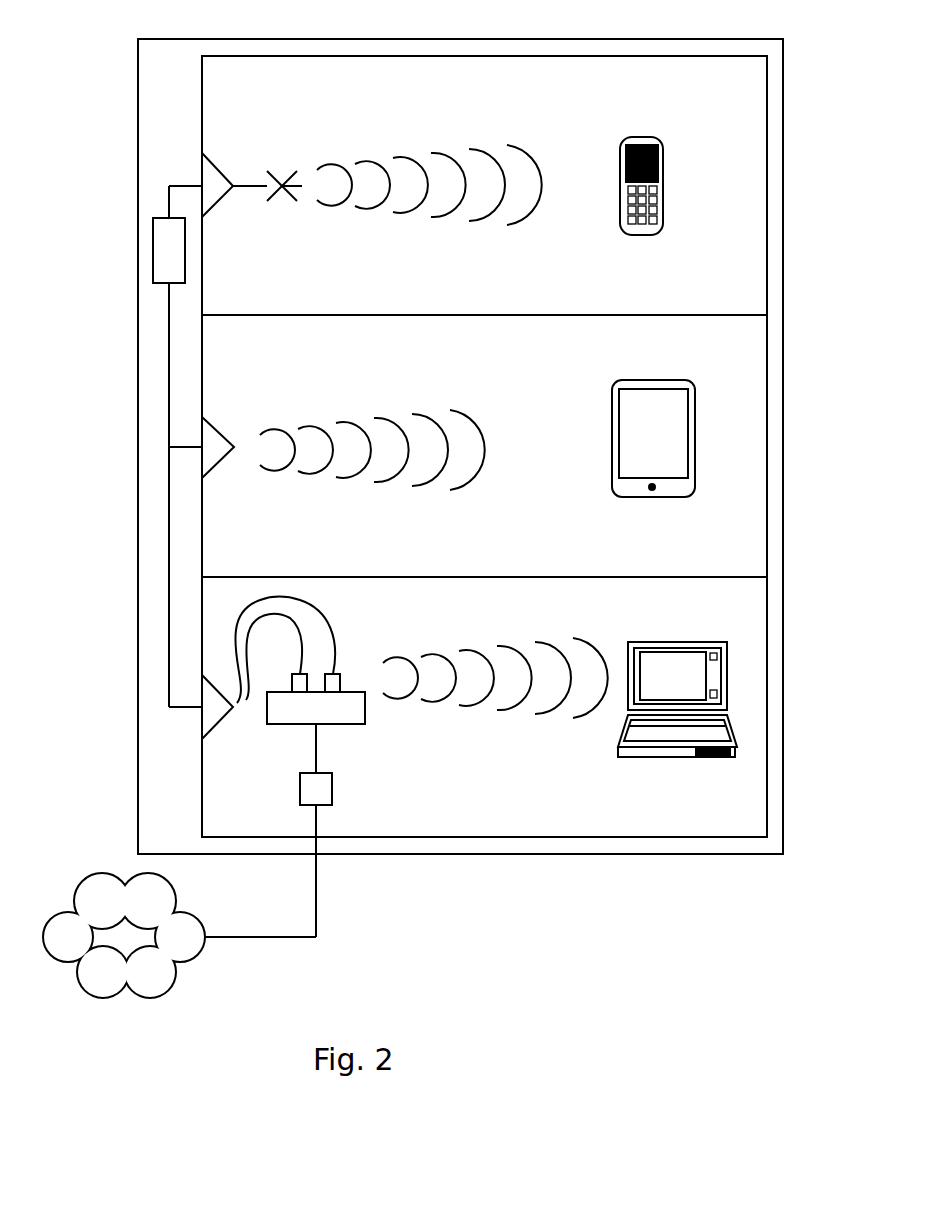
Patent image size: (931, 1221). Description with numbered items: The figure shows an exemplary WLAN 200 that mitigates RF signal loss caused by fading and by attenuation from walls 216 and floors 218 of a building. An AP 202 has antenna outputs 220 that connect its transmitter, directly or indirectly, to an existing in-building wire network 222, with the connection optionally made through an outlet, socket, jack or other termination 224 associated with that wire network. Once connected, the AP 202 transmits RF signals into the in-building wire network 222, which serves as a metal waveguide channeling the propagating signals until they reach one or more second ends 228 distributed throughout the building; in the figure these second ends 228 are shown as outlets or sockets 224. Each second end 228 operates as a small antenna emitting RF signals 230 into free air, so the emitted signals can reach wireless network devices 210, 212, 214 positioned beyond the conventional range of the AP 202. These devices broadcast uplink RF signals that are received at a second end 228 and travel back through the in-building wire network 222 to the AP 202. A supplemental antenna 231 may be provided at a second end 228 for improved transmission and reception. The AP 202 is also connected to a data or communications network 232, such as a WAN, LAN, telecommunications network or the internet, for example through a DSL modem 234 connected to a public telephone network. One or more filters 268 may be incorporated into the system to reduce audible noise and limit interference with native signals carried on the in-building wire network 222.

The WLAN 200 is at (434, 518).
The AP 202 is at (368, 713).
The wireless network device 210 is at (676, 760).
The wireless network device 212 is at (697, 438).
The wireless network device 214 is at (664, 182).
The walls 216 is at (765, 157).
The floors 218 is at (406, 315).
The antenna outputs 220 is at (340, 680).
The in-building wire network 222 is at (169, 490).
The termination 224 is at (222, 172).
The second ends 228 is at (197, 186).
The RF signals 230 is at (447, 160).
The supplemental antenna 231 is at (284, 170).
The data or communications network 232 is at (108, 946).
The DSL modem 234 is at (333, 790).
The filters 268 is at (153, 248).